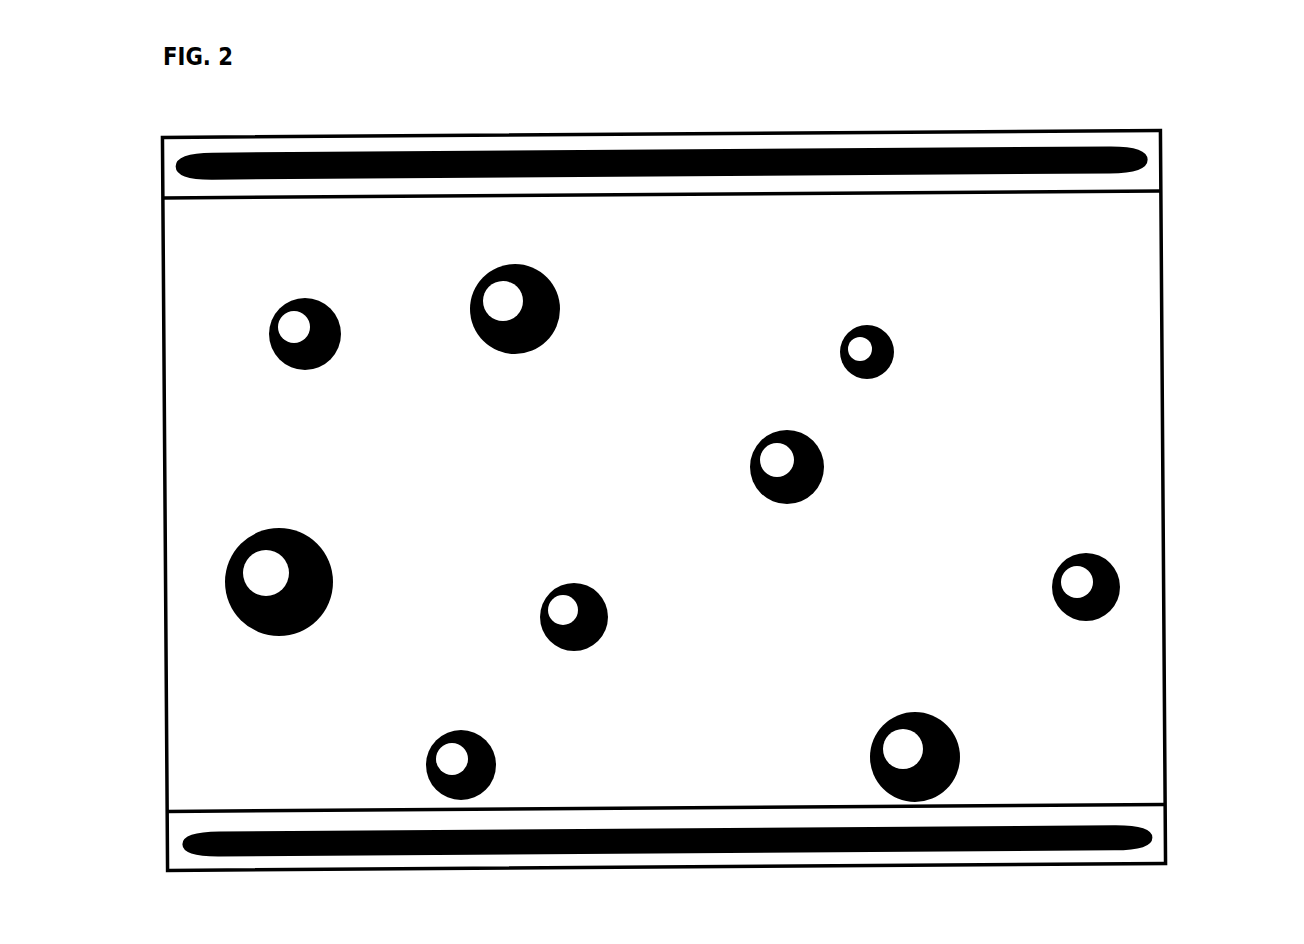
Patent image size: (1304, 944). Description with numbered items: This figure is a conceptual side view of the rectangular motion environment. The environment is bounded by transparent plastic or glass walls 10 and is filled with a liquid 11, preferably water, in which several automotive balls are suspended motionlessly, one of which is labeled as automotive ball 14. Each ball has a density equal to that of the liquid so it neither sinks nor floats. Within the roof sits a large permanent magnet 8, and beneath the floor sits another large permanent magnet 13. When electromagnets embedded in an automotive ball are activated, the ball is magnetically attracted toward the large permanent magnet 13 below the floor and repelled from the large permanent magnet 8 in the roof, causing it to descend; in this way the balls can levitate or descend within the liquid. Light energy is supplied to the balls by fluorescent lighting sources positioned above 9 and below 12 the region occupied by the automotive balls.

The large permanent magnet 8 is at (1082, 146).
The fluorescent lighting source 9 is at (1132, 178).
The walls 10 is at (1168, 409).
The liquid 11 is at (650, 470).
The fluorescent lighting source 12 is at (1125, 813).
The large permanent magnet 13 is at (1150, 838).
The automotive ball 14 is at (1117, 588).